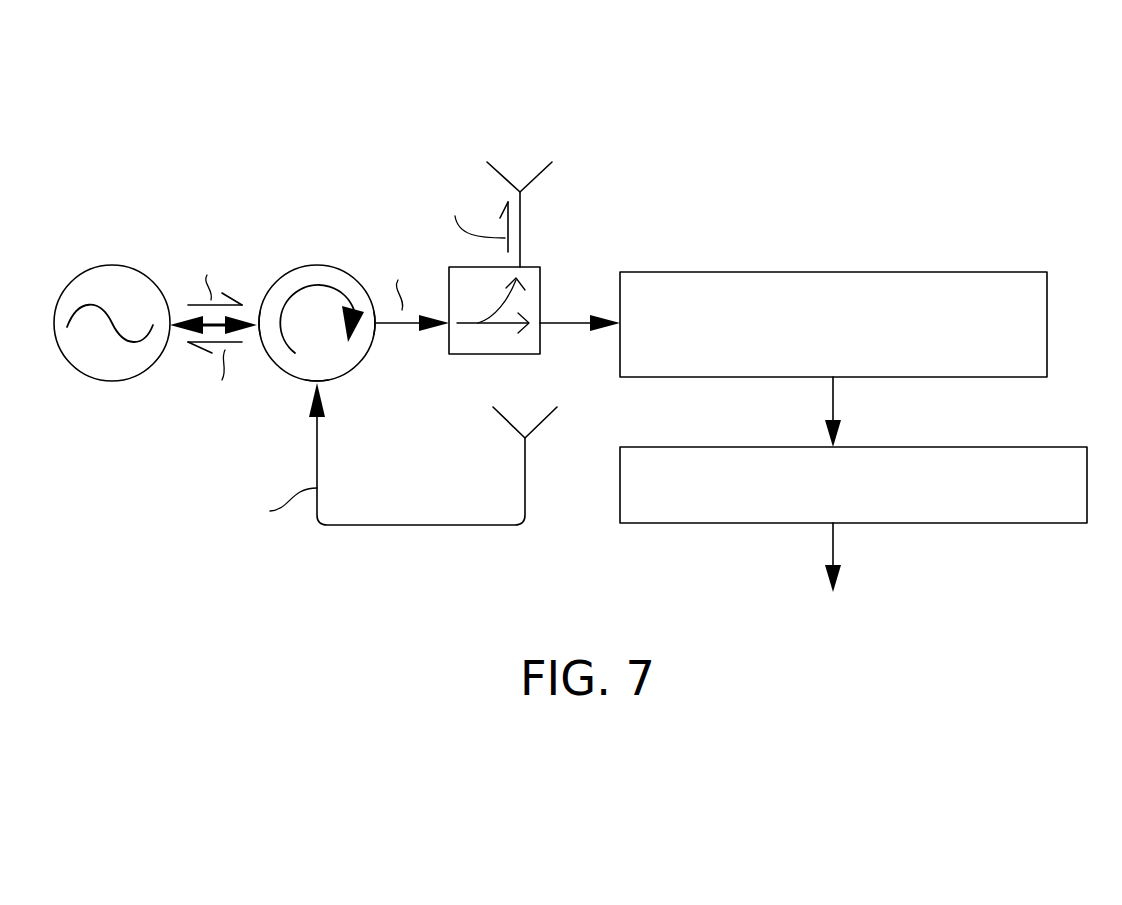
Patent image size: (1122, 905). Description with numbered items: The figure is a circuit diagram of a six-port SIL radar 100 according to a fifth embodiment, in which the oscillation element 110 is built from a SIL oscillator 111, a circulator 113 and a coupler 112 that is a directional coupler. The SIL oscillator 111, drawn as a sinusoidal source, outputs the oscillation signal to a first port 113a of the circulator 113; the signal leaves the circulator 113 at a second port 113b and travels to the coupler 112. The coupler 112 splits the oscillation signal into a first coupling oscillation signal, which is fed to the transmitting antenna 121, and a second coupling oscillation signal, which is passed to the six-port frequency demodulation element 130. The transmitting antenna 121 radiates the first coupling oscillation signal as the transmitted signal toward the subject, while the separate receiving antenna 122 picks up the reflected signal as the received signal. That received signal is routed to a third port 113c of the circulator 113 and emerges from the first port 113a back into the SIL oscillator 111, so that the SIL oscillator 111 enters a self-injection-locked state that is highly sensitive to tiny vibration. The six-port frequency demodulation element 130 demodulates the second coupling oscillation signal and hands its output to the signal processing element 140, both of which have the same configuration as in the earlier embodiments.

The six-port SIL radar 100 is at (1028, 78).
The oscillation element 110 is at (171, 142).
The SIL oscillator 111 is at (110, 265).
The coupler 112 is at (545, 270).
The circulator 113 is at (322, 265).
The first port 113a is at (259, 322).
The second port 113b is at (376, 331).
The third port 113c is at (312, 383).
The transmitting antenna 121 is at (504, 177).
The receiving antenna 122 is at (508, 418).
The six-port frequency demodulation element 130 is at (822, 272).
The signal processing element 140 is at (923, 523).